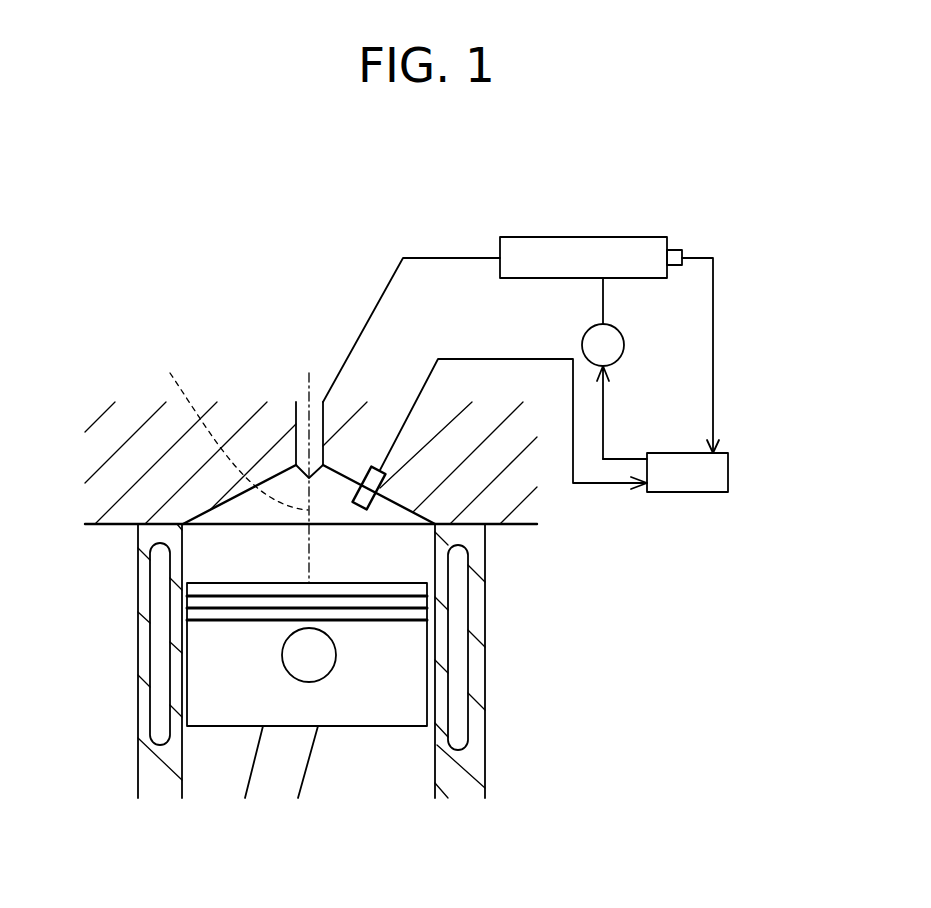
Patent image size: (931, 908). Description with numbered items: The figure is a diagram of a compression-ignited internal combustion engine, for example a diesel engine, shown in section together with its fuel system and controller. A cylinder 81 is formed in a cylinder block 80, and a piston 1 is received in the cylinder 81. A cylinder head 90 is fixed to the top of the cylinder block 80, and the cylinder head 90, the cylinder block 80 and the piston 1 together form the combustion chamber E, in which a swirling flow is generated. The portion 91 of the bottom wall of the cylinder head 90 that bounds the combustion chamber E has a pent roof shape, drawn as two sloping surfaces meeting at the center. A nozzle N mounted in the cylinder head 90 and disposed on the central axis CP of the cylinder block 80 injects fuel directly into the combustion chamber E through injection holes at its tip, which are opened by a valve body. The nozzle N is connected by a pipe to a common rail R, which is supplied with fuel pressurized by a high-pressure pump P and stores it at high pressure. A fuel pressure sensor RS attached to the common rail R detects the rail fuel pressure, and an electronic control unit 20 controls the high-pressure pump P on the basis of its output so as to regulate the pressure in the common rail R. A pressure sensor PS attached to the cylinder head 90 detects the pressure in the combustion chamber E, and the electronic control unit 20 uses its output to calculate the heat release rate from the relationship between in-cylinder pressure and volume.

The piston 1 is at (348, 727).
The electronic control unit (ECU) 20 is at (728, 472).
The cylinder block 80 is at (160, 773).
The cylinder 81 is at (437, 745).
The cylinder head 90 is at (247, 437).
The portion of the bottom wall of the cylinder head 91 is at (408, 510).
The nozzle N is at (320, 420).
The pressure sensor PS is at (370, 467).
The central axis of the cylinder block CP is at (230, 429).
The common rail R is at (613, 235).
The fuel pressure sensor RS is at (678, 250).
The high-pressure pump P is at (614, 368).
The combustion chamber E is at (240, 560).